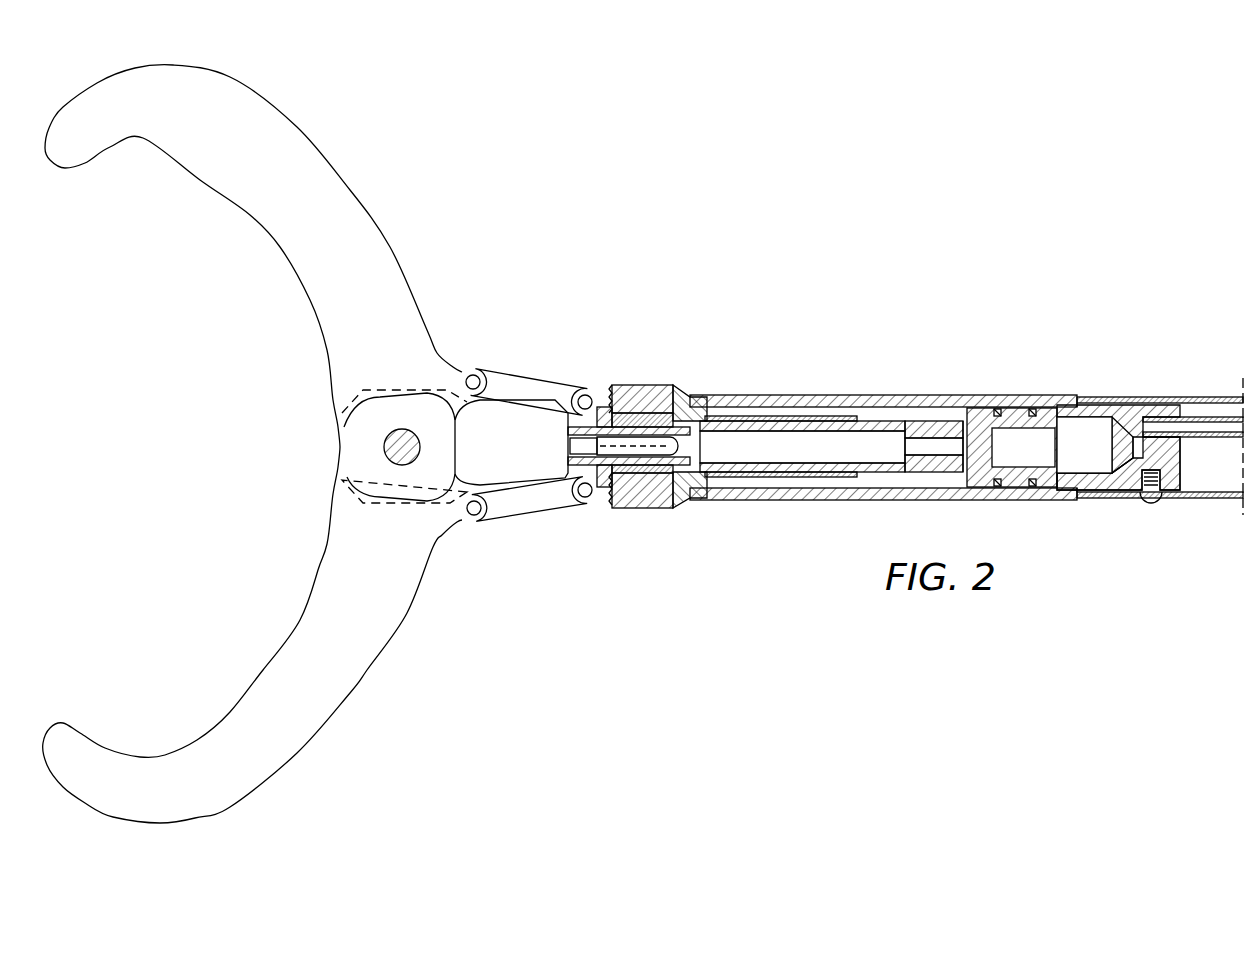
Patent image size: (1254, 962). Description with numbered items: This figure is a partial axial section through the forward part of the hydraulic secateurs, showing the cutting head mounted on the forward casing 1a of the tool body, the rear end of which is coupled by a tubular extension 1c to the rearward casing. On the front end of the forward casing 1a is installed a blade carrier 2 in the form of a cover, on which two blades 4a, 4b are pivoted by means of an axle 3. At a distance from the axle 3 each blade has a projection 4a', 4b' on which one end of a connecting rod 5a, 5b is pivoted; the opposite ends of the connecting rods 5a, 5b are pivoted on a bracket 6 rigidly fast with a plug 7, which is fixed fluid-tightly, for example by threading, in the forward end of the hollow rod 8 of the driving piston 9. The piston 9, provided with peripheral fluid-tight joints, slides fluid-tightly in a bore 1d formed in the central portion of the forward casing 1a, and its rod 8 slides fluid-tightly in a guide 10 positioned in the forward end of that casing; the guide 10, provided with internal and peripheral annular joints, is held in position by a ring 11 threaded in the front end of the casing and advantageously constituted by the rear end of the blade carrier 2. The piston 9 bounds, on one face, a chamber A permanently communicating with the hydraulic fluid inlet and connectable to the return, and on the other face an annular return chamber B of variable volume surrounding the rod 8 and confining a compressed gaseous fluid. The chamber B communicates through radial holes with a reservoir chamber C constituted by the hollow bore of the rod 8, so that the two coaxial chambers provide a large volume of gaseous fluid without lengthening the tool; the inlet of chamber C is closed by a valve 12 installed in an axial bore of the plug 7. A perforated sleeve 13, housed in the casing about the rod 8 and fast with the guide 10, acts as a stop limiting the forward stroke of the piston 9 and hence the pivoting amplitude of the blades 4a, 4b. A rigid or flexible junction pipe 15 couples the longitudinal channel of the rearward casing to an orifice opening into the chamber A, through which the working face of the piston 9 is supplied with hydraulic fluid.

The blade 4a is at (253, 256).
The blade 4b is at (252, 635).
The projection 4a' is at (473, 336).
The projection 4b' is at (482, 547).
The connecting rod 5a is at (513, 387).
The connecting rod 5b is at (543, 502).
The axle 3 is at (390, 447).
The blade carrier 2 is at (535, 465).
The bracket 6 is at (597, 500).
The plug 7 is at (603, 417).
The ring 11 is at (650, 400).
The guide 10 is at (680, 417).
The hollow rod 8 is at (737, 418).
The valve 12 is at (675, 490).
The perforated sleeve 13 is at (787, 418).
The reservoir chamber C is at (847, 447).
The bore 1d is at (887, 416).
The forward casing 1a is at (743, 490).
The annular return chamber B is at (948, 418).
The driving piston 9 is at (1017, 418).
The chamber A is at (1085, 445).
The tubular extension 1c is at (1142, 397).
The junction pipe 15 is at (1200, 418).